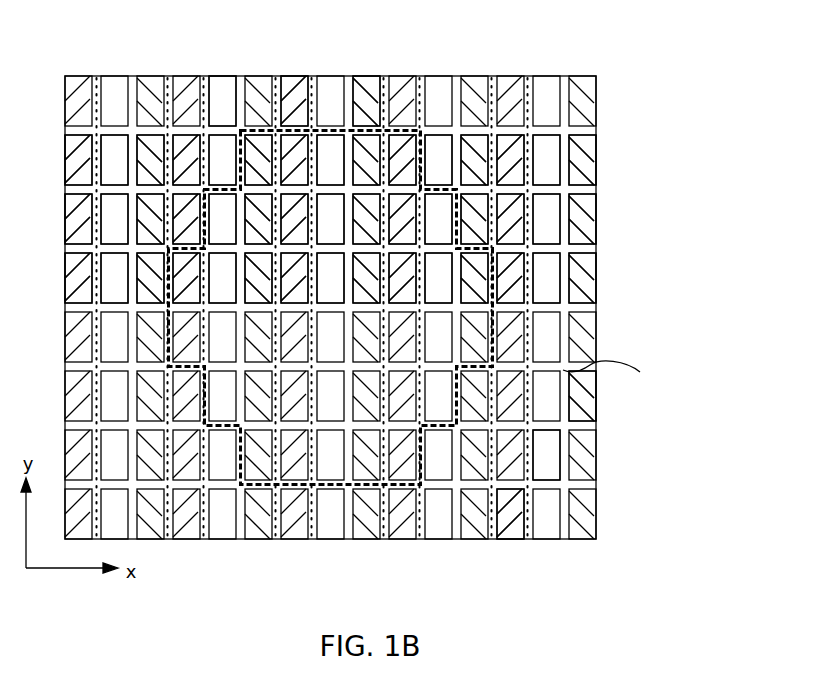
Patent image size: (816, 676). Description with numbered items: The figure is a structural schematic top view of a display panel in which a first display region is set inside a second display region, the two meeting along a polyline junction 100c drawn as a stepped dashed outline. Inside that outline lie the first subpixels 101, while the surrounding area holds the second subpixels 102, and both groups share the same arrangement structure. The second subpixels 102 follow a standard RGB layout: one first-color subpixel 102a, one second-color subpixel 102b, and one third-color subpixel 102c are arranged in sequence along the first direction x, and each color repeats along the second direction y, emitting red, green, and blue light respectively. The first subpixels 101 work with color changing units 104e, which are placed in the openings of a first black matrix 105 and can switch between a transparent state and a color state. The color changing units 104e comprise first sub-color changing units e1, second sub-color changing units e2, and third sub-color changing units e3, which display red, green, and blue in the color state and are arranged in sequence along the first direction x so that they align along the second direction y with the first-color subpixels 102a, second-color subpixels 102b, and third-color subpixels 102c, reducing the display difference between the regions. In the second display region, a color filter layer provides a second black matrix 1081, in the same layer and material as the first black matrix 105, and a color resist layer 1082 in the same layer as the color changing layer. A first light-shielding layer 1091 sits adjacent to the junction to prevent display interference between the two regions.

The second black matrix 1081 is at (168, 90).
The color resist layer 1082 is at (228, 93).
The first black matrix 105 is at (300, 118).
The first light-shielding layer 1091 is at (357, 118).
The polyline junction 100c is at (415, 125).
The first subpixels 101 is at (495, 343).
The first sub-color changing units e1 is at (415, 153).
The second sub-color changing units e2 is at (437, 205).
The third sub-color changing units e3 is at (455, 272).
The color changing units 104e is at (393, 215).
The third-color subpixels 102c is at (583, 412).
The second-color subpixels 102b is at (543, 450).
The first-color subpixels 102a is at (512, 508).
The second subpixels 102 is at (613, 457).